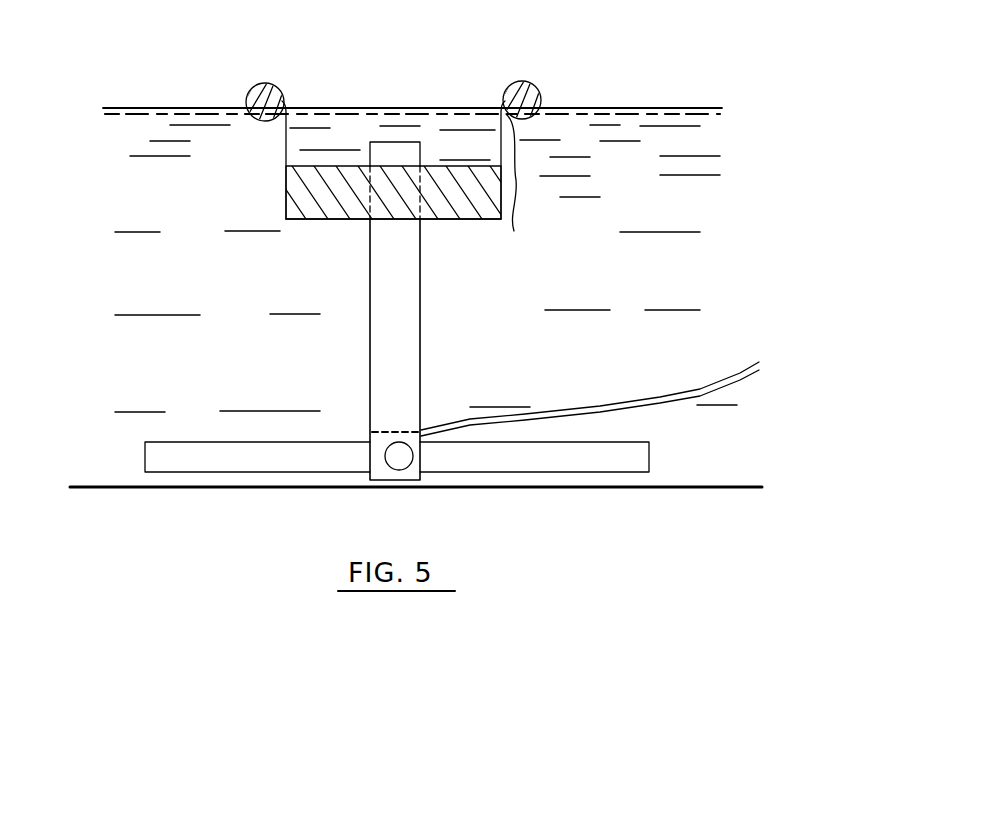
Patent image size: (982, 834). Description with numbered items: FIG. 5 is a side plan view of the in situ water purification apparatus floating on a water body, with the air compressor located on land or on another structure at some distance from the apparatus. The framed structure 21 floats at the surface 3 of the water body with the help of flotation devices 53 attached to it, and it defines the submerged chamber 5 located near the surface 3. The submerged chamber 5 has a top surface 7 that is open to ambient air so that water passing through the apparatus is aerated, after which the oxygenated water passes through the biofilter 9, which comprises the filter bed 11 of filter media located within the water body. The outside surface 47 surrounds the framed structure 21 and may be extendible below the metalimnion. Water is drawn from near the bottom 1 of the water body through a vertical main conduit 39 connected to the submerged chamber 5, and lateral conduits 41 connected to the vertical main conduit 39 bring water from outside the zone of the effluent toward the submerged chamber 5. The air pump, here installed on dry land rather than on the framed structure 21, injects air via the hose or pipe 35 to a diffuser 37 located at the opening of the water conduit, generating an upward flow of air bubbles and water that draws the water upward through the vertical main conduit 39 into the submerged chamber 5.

The bottom 1 is at (128, 440).
The surface 3 is at (618, 138).
The submerged chamber 5 is at (343, 143).
The top surface 7 is at (420, 107).
The biofilter 9 is at (522, 172).
The filter bed 11 is at (332, 188).
The framed structure 21 is at (250, 146).
The hose or pipe 35 is at (723, 390).
The diffuser 37 is at (391, 430).
The vertical main conduit 39 is at (418, 320).
The lateral conduit 41 is at (374, 488).
The outside surface 47 is at (284, 195).
The flotation device 53 is at (265, 82).